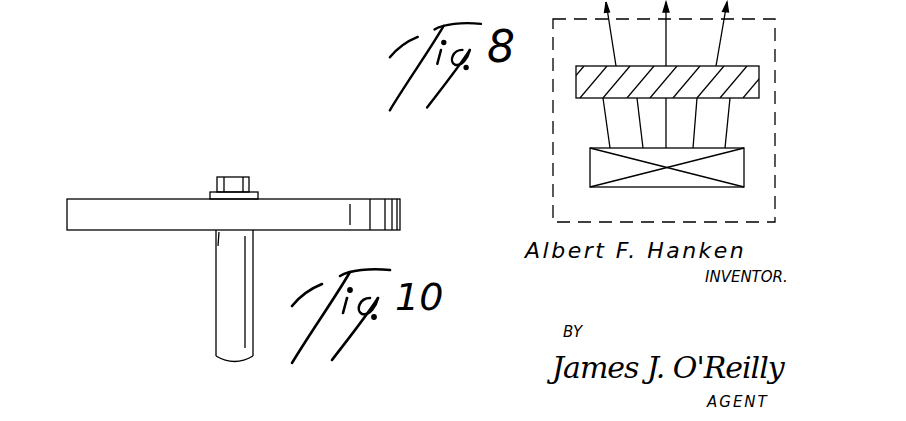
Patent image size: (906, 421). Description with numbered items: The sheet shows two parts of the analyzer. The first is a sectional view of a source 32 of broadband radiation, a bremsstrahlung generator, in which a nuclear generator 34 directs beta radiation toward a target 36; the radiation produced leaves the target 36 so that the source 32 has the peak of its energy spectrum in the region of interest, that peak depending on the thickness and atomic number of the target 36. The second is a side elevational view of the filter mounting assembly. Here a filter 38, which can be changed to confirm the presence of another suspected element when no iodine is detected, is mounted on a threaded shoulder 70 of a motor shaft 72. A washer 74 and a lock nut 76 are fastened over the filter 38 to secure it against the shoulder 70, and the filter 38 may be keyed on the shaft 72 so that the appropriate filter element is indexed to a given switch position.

In FIG. 8, the source of broadband radiation 32 is at (826, 184).
In FIG. 8, the nuclear generator 34 is at (738, 162).
In FIG. 8, the target 36 is at (750, 82).
In FIG. 10, the filter 38 is at (96, 196).
In FIG. 10, the threaded shoulder 70 is at (222, 237).
In FIG. 10, the motor shaft 72 is at (223, 310).
In FIG. 10, the washer 74 is at (213, 192).
In FIG. 10, the lock nut 76 is at (247, 182).